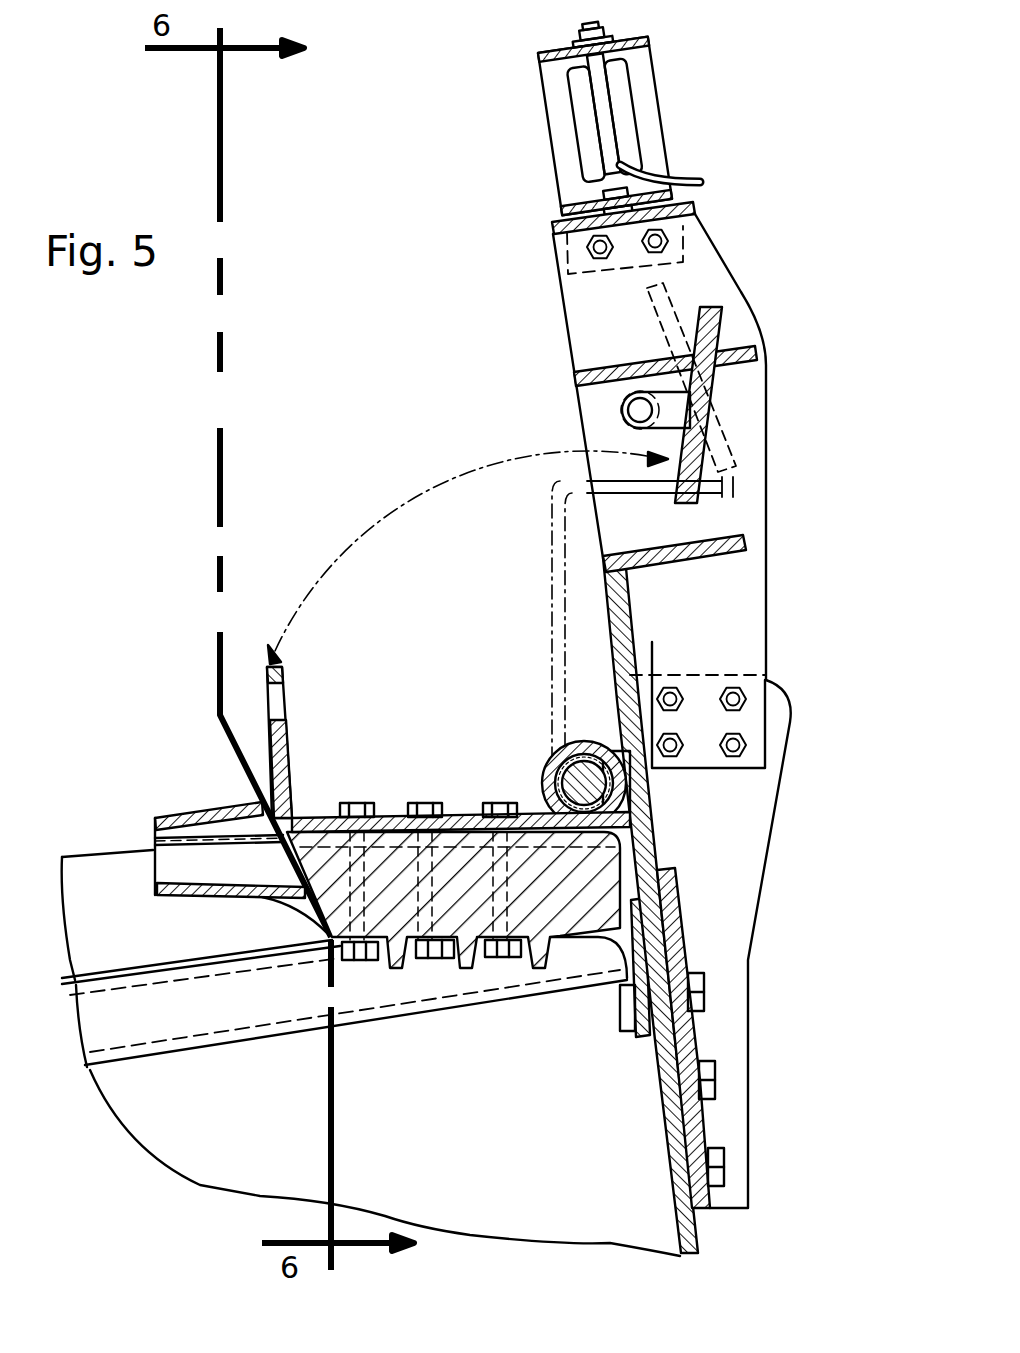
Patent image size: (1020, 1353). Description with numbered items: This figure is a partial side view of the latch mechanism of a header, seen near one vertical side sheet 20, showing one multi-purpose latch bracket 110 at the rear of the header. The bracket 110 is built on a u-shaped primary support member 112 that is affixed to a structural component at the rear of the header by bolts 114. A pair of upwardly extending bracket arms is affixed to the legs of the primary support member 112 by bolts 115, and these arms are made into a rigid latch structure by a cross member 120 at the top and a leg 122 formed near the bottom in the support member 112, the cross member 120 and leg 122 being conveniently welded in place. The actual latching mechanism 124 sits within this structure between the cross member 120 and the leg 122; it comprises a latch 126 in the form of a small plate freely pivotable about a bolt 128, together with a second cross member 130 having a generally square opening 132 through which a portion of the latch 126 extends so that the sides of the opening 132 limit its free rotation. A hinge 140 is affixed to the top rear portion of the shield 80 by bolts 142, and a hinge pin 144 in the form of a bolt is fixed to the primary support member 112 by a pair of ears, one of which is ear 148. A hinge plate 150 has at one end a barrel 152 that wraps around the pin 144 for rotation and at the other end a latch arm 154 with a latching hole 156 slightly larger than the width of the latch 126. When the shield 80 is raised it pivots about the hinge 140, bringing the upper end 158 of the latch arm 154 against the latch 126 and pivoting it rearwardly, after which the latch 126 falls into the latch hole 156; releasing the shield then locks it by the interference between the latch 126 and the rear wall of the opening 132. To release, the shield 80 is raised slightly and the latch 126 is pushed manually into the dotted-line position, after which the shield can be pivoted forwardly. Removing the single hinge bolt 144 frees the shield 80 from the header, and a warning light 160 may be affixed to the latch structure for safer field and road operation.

The vertical side sheet 20 is at (503, 1116).
The shield 80 is at (215, 808).
The multi-purpose latch bracket 110 is at (790, 465).
The u-shaped primary support member 112 is at (660, 880).
The bolts 114 is at (724, 1165).
The bolts 115 is at (733, 745).
The cross member 120 is at (700, 210).
The leg 122 is at (668, 556).
The latching mechanism 124 is at (542, 364).
The latch 126 is at (705, 410).
The bolt 128 is at (628, 408).
The second cross member 130 is at (738, 354).
The opening 132 is at (668, 372).
The hinge 140 is at (476, 682).
The bolts 142 is at (495, 803).
The hinge pin 144 is at (542, 770).
The ear 148 is at (642, 818).
The hinge plate 150 is at (318, 815).
The barrel 152 is at (583, 760).
The latch arm 154 is at (288, 752).
The latching hole 156 is at (278, 693).
The upper end 158 is at (262, 660).
The warning light 160 is at (508, 143).